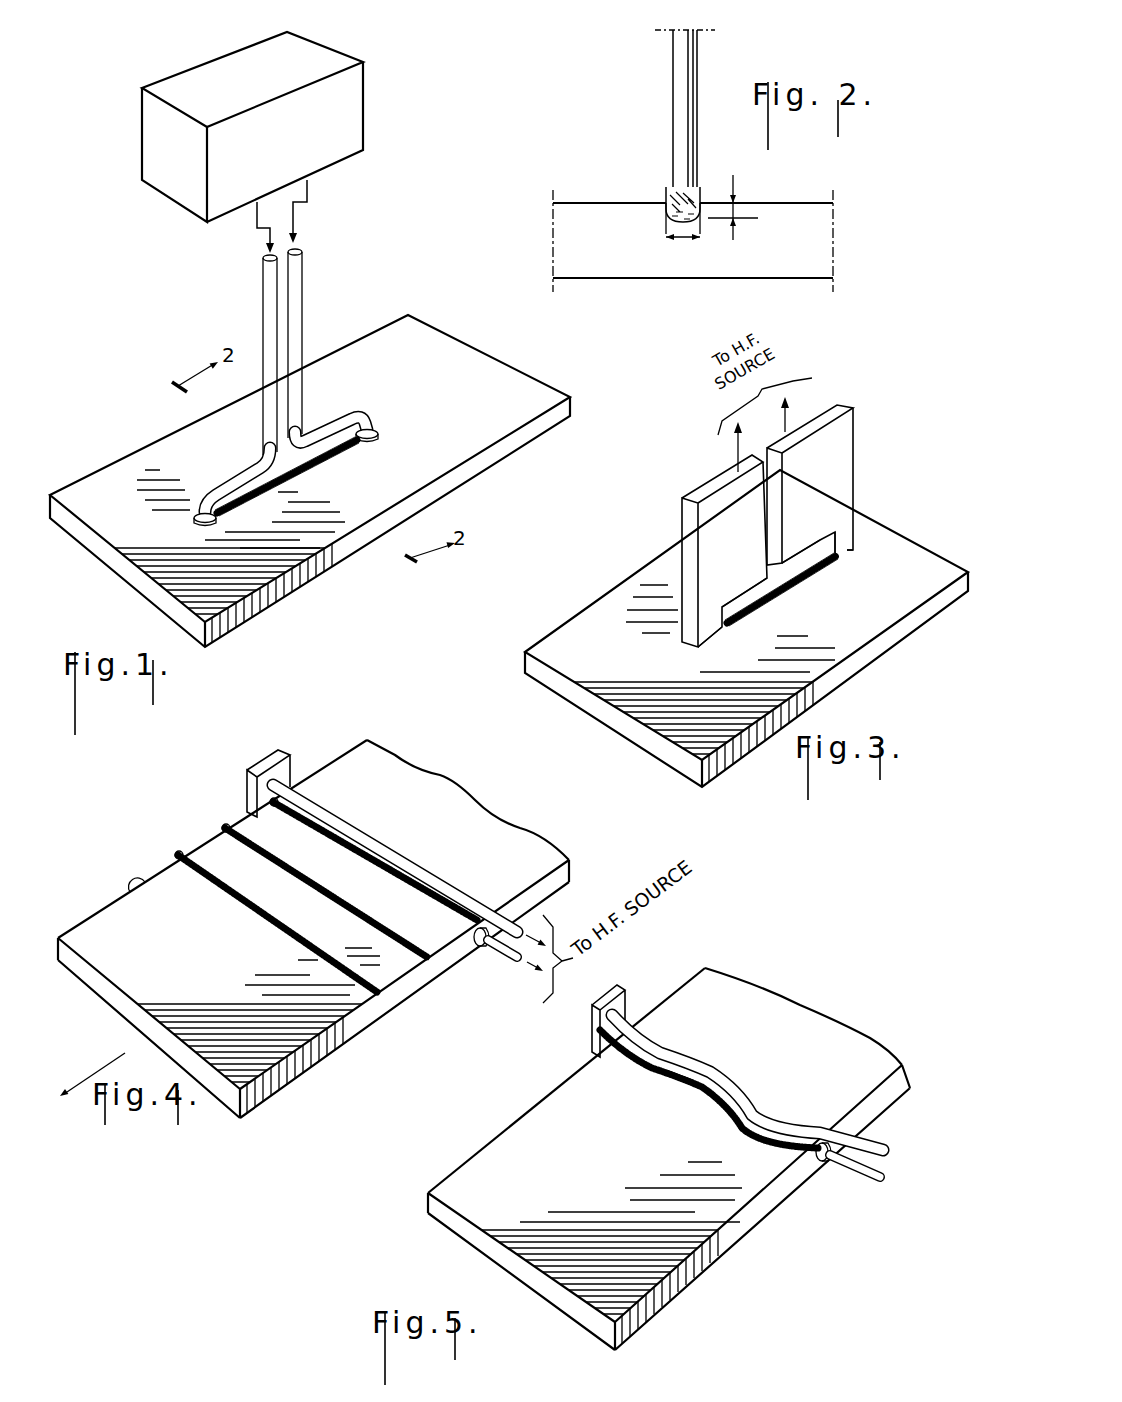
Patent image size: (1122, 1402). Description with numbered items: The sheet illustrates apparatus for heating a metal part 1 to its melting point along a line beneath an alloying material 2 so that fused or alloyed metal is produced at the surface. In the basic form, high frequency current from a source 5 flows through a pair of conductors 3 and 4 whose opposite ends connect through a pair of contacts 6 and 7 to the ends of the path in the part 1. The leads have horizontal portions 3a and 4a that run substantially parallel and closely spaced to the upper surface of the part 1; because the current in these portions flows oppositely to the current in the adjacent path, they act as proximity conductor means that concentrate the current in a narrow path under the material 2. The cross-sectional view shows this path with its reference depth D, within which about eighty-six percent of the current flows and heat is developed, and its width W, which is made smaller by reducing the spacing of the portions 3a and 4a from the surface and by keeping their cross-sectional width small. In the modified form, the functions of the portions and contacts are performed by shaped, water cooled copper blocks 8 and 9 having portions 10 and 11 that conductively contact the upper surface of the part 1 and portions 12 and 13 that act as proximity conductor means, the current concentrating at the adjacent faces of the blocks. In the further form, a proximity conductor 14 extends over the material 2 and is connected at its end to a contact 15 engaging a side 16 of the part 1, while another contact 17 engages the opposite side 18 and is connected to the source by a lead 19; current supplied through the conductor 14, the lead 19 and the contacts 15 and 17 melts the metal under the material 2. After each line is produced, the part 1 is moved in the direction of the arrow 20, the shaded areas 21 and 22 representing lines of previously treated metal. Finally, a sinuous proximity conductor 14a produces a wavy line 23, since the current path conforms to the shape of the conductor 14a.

In FIG. 1, the metal part 1 is at (385, 332).
In FIG. 2, the metal part 1 is at (558, 220).
In FIG. 3, the metal part 1 is at (905, 548).
In FIG. 4, the metal part 1 is at (395, 768).
In FIG. 5, the metal part 1 is at (755, 1007).
In FIG. 1, the alloying material 2 is at (303, 473).
In FIG. 2, the alloying material 2 is at (678, 197).
In FIG. 3, the alloying material 2 is at (777, 590).
In FIG. 4, the alloying material 2 is at (385, 872).
In FIG. 1, the conductor 3 is at (262, 287).
In FIG. 3, the conductor 3 is at (735, 447).
In FIG. 1, the horizontal portion 3a is at (232, 485).
In FIG. 1, the conductor 4 is at (303, 283).
In FIG. 2, the conductor 4 is at (672, 100).
In FIG. 3, the conductor 4 is at (788, 404).
In FIG. 1, the horizontal portion 4a is at (365, 407).
In FIG. 1, the source of high frequency current 5 is at (190, 200).
In FIG. 1, the contact 6 is at (380, 435).
In FIG. 2, the contact 6 is at (699, 190).
In FIG. 1, the contact 7 is at (202, 530).
In FIG. 3, the shaped metal block 8 is at (854, 442).
In FIG. 3, the shaped metal block 9 is at (684, 520).
In FIG. 3, the contact portion 10 is at (848, 553).
In FIG. 3, the contact portion 11 is at (707, 632).
In FIG. 3, the proximity conductor portion 12 is at (812, 550).
In FIG. 3, the proximity conductor portion 13 is at (757, 583).
In FIG. 4, the proximity conductor 14 is at (445, 883).
In FIG. 5, the sinuous proximity conductor 14a is at (755, 1092).
In FIG. 4, the contact 15 is at (290, 753).
In FIG. 5, the contact 15 is at (625, 998).
In FIG. 4, the side of the part 16 is at (146, 888).
In FIG. 4, the contact 17 is at (480, 947).
In FIG. 4, the opposite side of the part 18 is at (348, 1043).
In FIG. 5, the opposite side of the part 18 is at (778, 1198).
In FIG. 4, the lead 19 is at (512, 963).
In FIG. 4, the arrow 20 is at (100, 1068).
In FIG. 4, the line of previously treated metal 21 is at (293, 937).
In FIG. 4, the line of previously treated metal 22 is at (342, 903).
In FIG. 5, the wavy line 23 is at (693, 1088).
In FIG. 2, the reference depth D is at (740, 212).
In FIG. 2, the width of the current path W is at (686, 242).